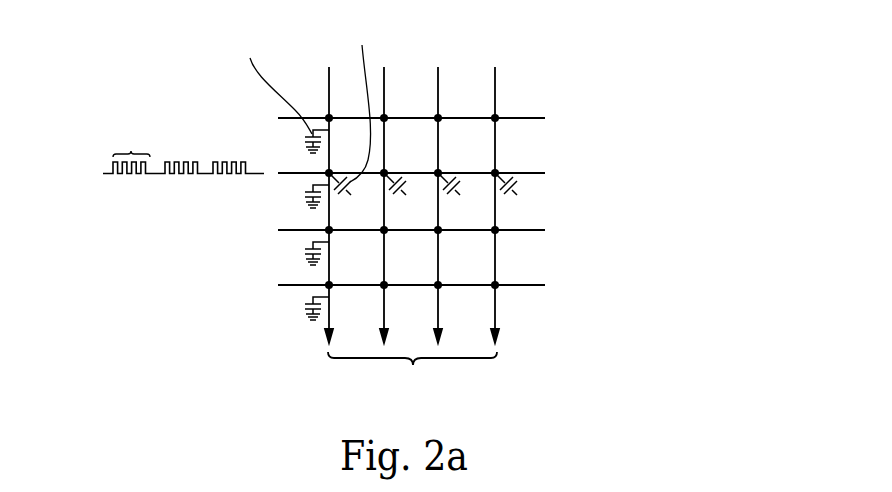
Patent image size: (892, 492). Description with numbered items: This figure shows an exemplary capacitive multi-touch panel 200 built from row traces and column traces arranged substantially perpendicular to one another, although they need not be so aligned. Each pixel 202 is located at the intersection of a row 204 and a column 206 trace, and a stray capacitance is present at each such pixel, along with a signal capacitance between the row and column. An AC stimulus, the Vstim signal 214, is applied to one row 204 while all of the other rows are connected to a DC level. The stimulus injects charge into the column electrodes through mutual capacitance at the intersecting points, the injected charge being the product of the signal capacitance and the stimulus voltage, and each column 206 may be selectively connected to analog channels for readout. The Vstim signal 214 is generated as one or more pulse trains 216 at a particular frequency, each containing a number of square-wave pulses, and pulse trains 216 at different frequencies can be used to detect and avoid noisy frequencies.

The capacitive multi-touch panel 200 is at (687, 183).
The pixel 202 is at (497, 116).
The row 204 is at (533, 119).
The column 206 is at (497, 213).
The Vstim signal 214 is at (286, 177).
The pulse train 216 is at (136, 107).